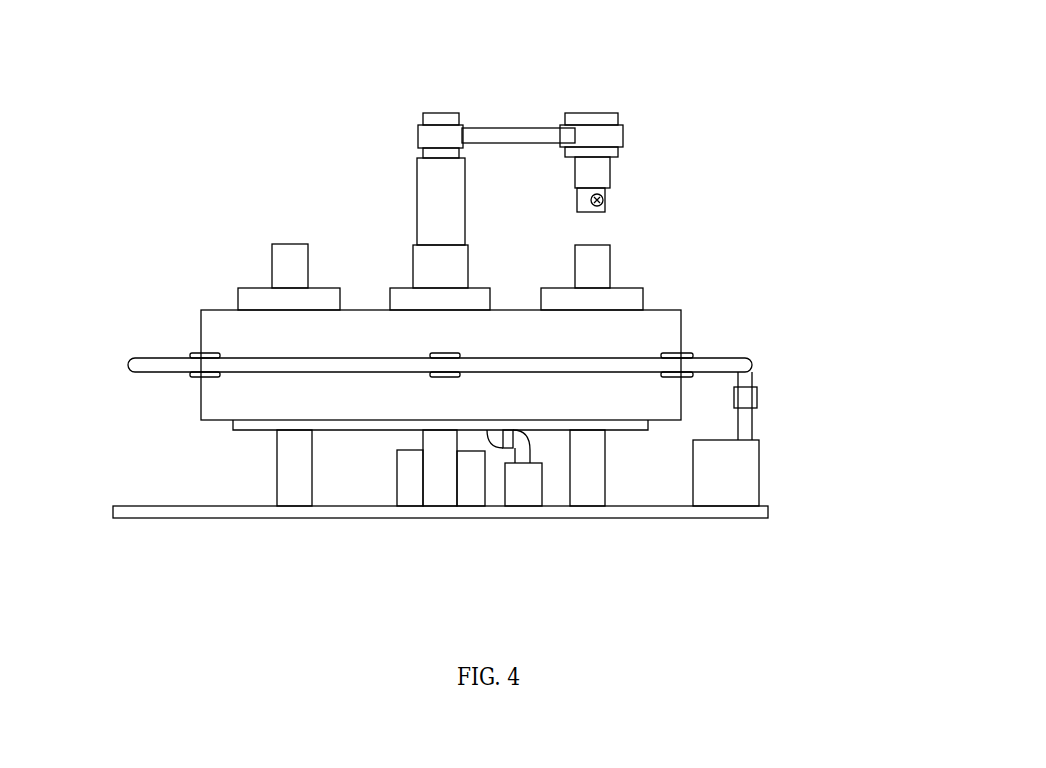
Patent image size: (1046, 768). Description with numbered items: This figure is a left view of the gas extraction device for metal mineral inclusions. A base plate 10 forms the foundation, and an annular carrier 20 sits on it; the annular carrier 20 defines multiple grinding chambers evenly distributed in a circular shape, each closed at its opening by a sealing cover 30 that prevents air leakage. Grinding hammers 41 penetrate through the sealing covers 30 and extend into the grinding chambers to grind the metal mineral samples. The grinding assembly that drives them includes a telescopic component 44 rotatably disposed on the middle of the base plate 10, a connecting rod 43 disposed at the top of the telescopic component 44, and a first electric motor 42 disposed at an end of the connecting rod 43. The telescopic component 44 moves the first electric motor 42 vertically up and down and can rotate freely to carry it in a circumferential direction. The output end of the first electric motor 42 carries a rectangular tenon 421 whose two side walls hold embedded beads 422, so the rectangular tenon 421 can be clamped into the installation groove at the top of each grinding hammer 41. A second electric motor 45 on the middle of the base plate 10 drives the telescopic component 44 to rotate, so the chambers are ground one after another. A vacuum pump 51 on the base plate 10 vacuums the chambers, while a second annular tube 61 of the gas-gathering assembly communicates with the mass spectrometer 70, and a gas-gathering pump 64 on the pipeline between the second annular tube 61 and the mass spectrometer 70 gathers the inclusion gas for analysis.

The base plate 10 is at (340, 512).
The annular carrier 20 is at (215, 328).
The sealing cover 30 is at (253, 297).
The grinding hammer 41 is at (290, 255).
The first electric motor 42 is at (603, 120).
The rectangular tenon 421 is at (603, 210).
The embedded bead 422 is at (602, 198).
The connecting rod 43 is at (500, 137).
The telescopic component 44 is at (432, 192).
The second electric motor 45 is at (470, 475).
The vacuum pump 51 is at (525, 485).
The second annular tube 61 is at (140, 360).
The gas-gathering pump 64 is at (752, 398).
The mass spectrometer 70 is at (737, 480).